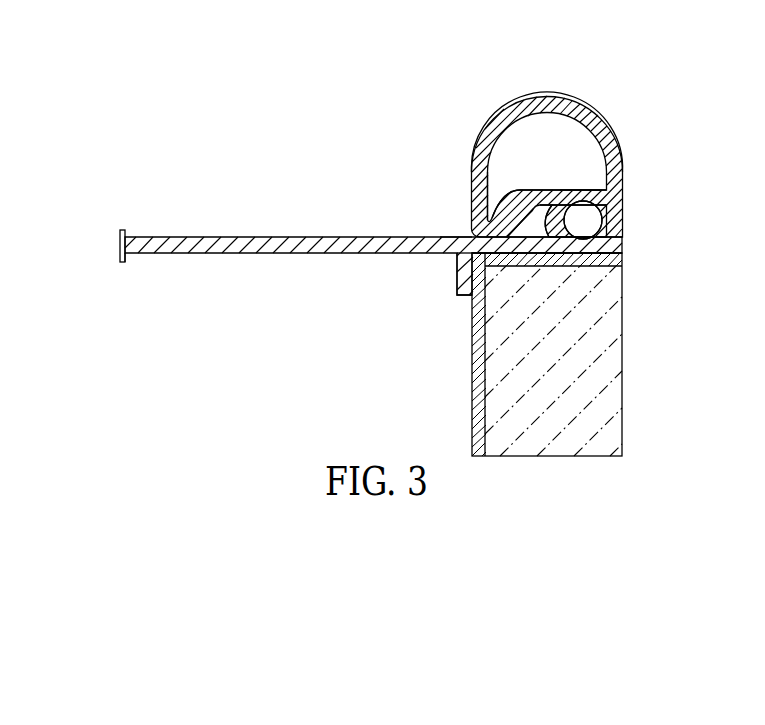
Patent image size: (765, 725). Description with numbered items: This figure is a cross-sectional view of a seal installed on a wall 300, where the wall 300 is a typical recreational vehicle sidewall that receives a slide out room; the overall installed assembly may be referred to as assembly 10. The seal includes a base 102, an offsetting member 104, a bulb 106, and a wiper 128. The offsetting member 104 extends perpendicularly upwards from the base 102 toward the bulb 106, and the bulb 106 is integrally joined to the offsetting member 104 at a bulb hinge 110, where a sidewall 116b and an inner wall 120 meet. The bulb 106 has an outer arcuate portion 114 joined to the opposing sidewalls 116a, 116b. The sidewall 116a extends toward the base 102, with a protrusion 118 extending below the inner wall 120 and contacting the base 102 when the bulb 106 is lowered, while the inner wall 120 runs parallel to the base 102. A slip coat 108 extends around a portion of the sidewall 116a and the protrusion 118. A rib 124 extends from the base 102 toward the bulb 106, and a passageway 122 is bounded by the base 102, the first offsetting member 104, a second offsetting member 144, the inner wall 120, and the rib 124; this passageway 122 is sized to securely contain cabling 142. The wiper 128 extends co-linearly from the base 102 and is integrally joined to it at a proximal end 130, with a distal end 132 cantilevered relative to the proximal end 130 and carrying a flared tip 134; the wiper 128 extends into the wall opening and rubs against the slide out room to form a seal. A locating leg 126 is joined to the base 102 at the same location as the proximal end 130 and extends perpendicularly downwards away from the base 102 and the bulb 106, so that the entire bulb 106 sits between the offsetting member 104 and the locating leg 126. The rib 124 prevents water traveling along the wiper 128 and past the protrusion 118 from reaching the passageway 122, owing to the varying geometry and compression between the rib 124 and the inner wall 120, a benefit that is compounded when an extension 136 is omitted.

The seal assembly 10 is at (208, 94).
The base 102 is at (563, 254).
The offsetting member 104 is at (623, 224).
The bulb 106 is at (548, 136).
The slip coat 108 is at (473, 176).
The bulb hinge 110 is at (604, 214).
The outer arcuate portion 114 is at (546, 95).
The sidewall 116a is at (478, 134).
The sidewall 116b is at (612, 133).
The protrusion 118 is at (474, 212).
The inner wall 120 is at (580, 190).
The passageway 122 is at (623, 253).
The rib 124 is at (598, 268).
The locating leg 126 is at (466, 290).
The wiper 128 is at (236, 262).
The proximal end 130 is at (457, 255).
The distal end 132 is at (120, 245).
The flared tip 134 is at (130, 260).
The extension 136 is at (457, 240).
The cabling 142 is at (560, 196).
The second offsetting member 144 is at (612, 198).
The wall 300 is at (507, 387).